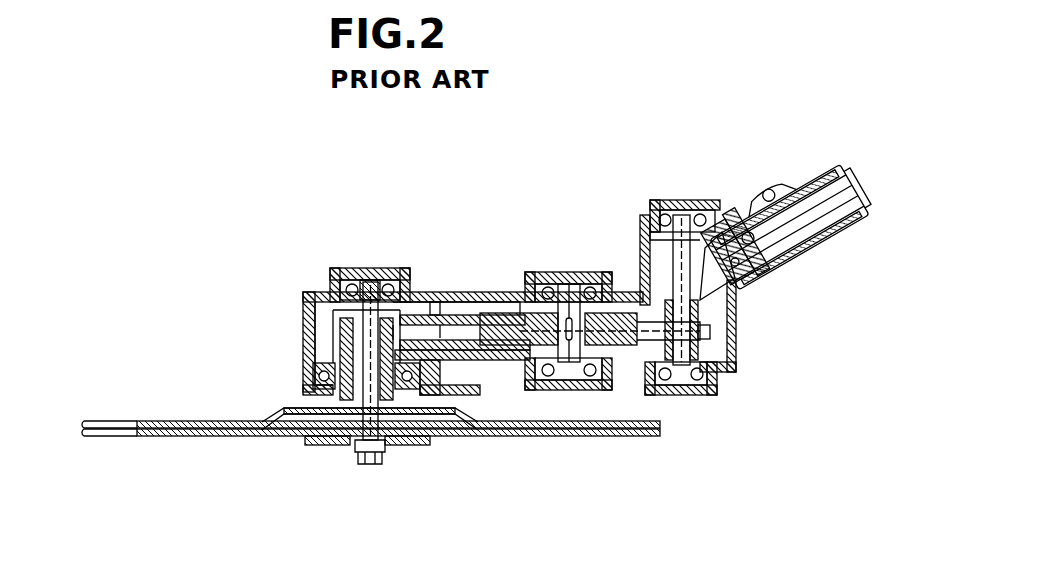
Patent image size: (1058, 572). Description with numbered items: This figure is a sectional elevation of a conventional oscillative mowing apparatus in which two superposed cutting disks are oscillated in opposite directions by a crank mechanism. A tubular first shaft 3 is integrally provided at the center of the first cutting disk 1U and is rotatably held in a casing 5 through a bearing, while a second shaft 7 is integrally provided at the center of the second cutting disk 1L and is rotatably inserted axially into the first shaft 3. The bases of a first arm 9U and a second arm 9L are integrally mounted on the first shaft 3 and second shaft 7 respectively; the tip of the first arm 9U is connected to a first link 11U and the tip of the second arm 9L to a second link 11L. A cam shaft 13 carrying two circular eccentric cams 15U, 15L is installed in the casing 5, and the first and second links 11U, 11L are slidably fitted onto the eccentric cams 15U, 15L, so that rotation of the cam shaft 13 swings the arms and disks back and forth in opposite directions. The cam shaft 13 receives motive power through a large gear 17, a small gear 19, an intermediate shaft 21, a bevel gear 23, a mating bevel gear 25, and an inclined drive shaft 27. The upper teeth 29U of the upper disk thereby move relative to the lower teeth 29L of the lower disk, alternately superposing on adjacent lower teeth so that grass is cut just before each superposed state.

The first cutting disk 1U is at (178, 421).
The second cutting disk 1L is at (162, 434).
The upper teeth 29U is at (117, 422).
The lower teeth 29L is at (118, 434).
The first shaft 3 is at (296, 408).
The casing 5 is at (496, 296).
The second shaft 7 is at (342, 440).
The first arm 9U is at (395, 292).
The second arm 9L is at (388, 438).
The first link 11U is at (460, 316).
The second link 11L is at (495, 355).
The cam shaft 13 is at (585, 288).
The circular eccentric cam 15U is at (510, 315).
The circular eccentric cam 15L is at (632, 368).
The large gear 17 is at (528, 382).
The small gear 19 is at (703, 333).
The intermediate shaft 21 is at (695, 297).
The bevel gear 23 is at (722, 212).
The bevel gear 25 is at (723, 218).
The drive shaft 27 is at (845, 222).